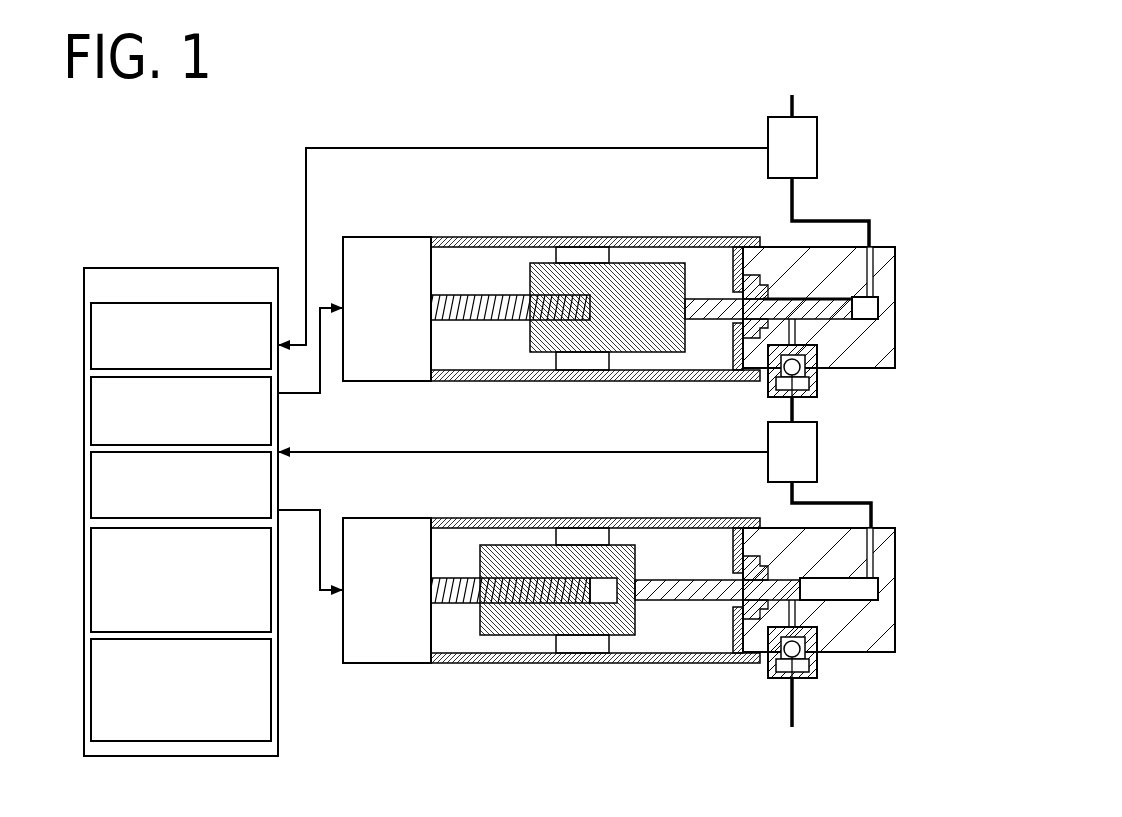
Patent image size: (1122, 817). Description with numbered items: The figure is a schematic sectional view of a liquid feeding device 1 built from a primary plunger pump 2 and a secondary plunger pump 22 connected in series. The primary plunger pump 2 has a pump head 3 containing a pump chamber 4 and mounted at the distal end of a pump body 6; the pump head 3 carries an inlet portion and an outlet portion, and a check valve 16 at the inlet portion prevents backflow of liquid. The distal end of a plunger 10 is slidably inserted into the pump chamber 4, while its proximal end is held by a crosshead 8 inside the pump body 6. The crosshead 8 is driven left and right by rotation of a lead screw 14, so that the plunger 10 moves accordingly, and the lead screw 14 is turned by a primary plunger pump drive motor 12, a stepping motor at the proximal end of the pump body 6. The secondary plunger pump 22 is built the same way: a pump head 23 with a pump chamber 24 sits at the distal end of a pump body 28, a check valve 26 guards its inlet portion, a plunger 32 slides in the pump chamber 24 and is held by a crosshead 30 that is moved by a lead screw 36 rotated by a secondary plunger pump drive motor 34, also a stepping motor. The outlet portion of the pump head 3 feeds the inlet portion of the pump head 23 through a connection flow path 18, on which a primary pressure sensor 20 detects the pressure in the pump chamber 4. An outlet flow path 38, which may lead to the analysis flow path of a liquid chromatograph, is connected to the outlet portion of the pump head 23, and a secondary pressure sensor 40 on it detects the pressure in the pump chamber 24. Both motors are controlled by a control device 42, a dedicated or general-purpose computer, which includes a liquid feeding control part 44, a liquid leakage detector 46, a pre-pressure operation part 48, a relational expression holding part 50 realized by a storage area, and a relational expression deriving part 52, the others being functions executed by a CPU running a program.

The liquid feeding device 1 is at (188, 134).
The primary plunger pump 2 is at (573, 754).
The pump head 3 is at (878, 652).
The pump chamber 4 is at (832, 590).
The pump body 6 is at (460, 663).
The crosshead 8 is at (578, 623).
The plunger 10 is at (670, 593).
The primary plunger pump drive motor 12 is at (372, 663).
The lead screw 14 is at (512, 592).
The check valve 16 is at (768, 678).
The connection flow path 18 is at (871, 503).
The primary pressure sensor 20 is at (817, 452).
The secondary plunger pump 22 is at (604, 417).
The pump head 23 is at (843, 370).
The pump chamber 24 is at (867, 309).
The check valve 26 is at (768, 390).
The pump body 28 is at (471, 237).
The crosshead 30 is at (623, 275).
The plunger 32 is at (707, 308).
The secondary plunger pump drive motor 34 is at (401, 237).
The lead screw 36 is at (498, 302).
The outlet flow path 38 is at (869, 222).
The secondary pressure sensor 40 is at (817, 131).
The control device 42 is at (160, 268).
The liquid feeding control part 44 is at (91, 318).
The liquid leakage detector 46 is at (91, 397).
The pre-pressure operation part 48 is at (91, 468).
The relational expression holding part 50 is at (91, 538).
The relational expression deriving part 52 is at (91, 666).